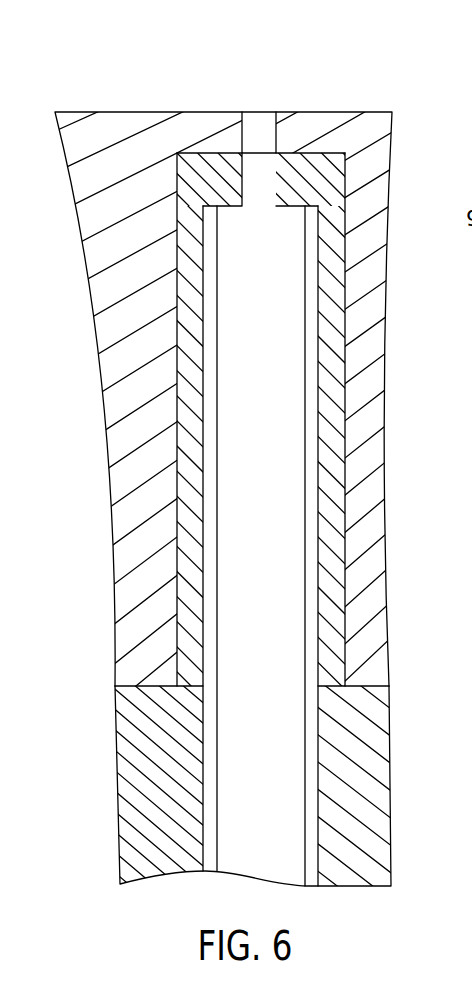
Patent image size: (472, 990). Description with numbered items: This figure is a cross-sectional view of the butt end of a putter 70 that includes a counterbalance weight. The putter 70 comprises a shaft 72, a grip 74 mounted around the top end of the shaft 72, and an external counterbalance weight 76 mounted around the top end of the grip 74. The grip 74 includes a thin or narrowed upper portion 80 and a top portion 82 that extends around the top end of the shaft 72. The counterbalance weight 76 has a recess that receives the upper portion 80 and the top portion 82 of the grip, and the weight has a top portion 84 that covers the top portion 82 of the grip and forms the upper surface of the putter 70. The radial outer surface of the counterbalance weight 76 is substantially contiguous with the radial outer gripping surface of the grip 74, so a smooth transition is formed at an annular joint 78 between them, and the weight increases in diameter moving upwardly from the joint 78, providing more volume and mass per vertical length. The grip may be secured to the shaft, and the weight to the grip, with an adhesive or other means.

The putter 70 is at (50, 70).
The shaft 72 is at (250, 797).
The grip 74 is at (130, 794).
The counterbalance weight 76 is at (133, 350).
The annular joint 78 is at (106, 686).
The upper portion 80 is at (193, 413).
The top portion 82 is at (218, 175).
The top portion 84 is at (304, 127).